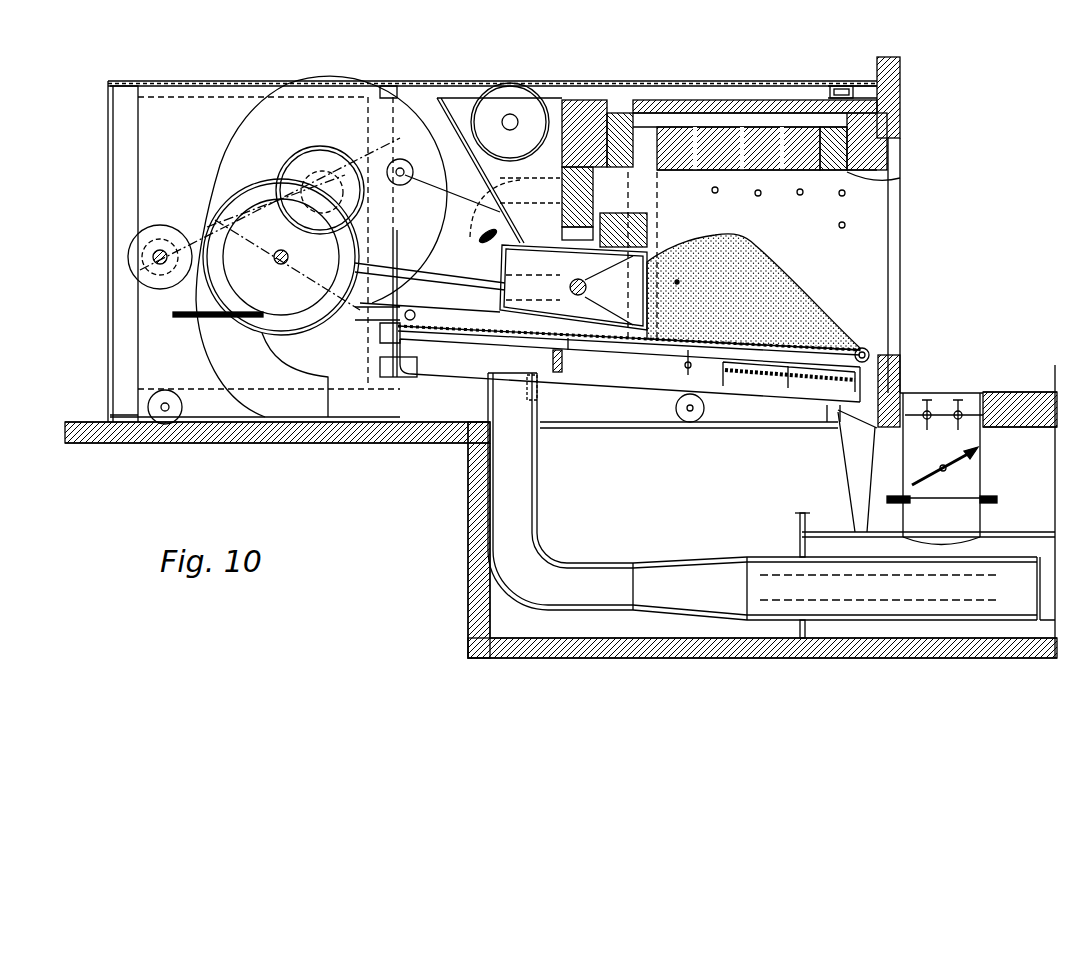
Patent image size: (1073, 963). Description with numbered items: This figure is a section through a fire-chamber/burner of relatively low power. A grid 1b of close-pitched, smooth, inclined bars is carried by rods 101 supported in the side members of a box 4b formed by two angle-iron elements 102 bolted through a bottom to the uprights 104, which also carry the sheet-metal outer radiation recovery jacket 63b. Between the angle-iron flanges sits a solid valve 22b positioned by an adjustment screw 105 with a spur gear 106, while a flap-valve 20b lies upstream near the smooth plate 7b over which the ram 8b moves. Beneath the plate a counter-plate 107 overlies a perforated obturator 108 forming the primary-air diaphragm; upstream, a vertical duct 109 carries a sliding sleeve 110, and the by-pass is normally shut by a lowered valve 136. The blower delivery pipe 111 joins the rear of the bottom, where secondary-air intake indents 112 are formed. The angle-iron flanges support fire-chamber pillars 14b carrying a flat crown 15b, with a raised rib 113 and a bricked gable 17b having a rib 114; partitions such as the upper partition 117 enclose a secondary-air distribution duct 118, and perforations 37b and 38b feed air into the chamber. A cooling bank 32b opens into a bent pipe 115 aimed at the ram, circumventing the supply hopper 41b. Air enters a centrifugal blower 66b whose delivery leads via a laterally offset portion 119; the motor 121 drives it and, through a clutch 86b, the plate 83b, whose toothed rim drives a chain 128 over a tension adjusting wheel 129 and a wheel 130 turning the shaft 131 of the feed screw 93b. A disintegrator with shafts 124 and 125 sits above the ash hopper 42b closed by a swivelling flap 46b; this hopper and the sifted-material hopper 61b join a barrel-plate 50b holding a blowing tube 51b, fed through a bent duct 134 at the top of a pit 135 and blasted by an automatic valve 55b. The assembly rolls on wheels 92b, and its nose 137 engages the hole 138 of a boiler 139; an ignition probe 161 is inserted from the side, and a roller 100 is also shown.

The centrifugal blower 66b is at (286, 105).
The uprights 104 is at (387, 80).
The chain 128 is at (423, 100).
The outer radiation recovery jacket 63b is at (505, 83).
The wheel 130 is at (520, 93).
The retractable feed screw 93b is at (530, 110).
The bricked gable 17b is at (593, 110).
The peripheral rib 114 is at (657, 100).
The secondary-air distribution duct 118 is at (787, 120).
The upper partition 117 is at (843, 83).
The raised rib 113 is at (900, 80).
The boiler 139 is at (895, 107).
The flat crown 15b is at (847, 172).
The fire-chamber pillars 14b is at (883, 218).
The hole 138 is at (898, 238).
The nose 137 is at (883, 283).
The grid 1b is at (847, 353).
The roller 100 is at (868, 352).
The box 4b is at (897, 367).
The spur gear 106 is at (930, 412).
The disintegrator shaft 124 is at (960, 415).
The disintegrator shaft 125 is at (977, 448).
The swivelling flap 46b is at (978, 470).
The barrel-plate 50b is at (993, 540).
The blowing tube 51b is at (907, 588).
The automatic valve 55b is at (805, 540).
The hopper for collecting sifted material 61b is at (848, 488).
The ash collecting hopper 42b is at (912, 445).
The solid valve 22b is at (793, 397).
The adjustment screw 105 is at (763, 382).
The flap-valve 20b is at (690, 422).
The angle-iron elements 102 is at (672, 380).
The valve 136 is at (540, 402).
The perforated obturator 108 is at (568, 340).
The smooth plate 7b is at (612, 350).
The counter-plate 107 is at (523, 335).
The secondary-air intake indents 112 is at (445, 357).
The delivery pipe 111 is at (412, 375).
The vertical duct 109 is at (490, 395).
The sliding sleeve 110 is at (497, 430).
The bent duct 134 is at (575, 577).
The pit 135 is at (500, 618).
The laterally offset portion 119 is at (300, 410).
The wheels 92b is at (167, 420).
The motor 121 is at (155, 237).
The plate 83b is at (245, 193).
The tension adjusting wheel 129 is at (402, 187).
The supply hopper 41b is at (480, 234).
The bent pipe 115 is at (467, 238).
The cooling bank 32b is at (573, 287).
The rods 101 is at (397, 332).
The electromagnetic clutch 86b is at (248, 290).
The shaft 131 is at (510, 127).
The ram 8b is at (643, 247).
The ignition probe 161 is at (677, 282).
The perforations 37b is at (782, 172).
The perforations 38b is at (842, 193).